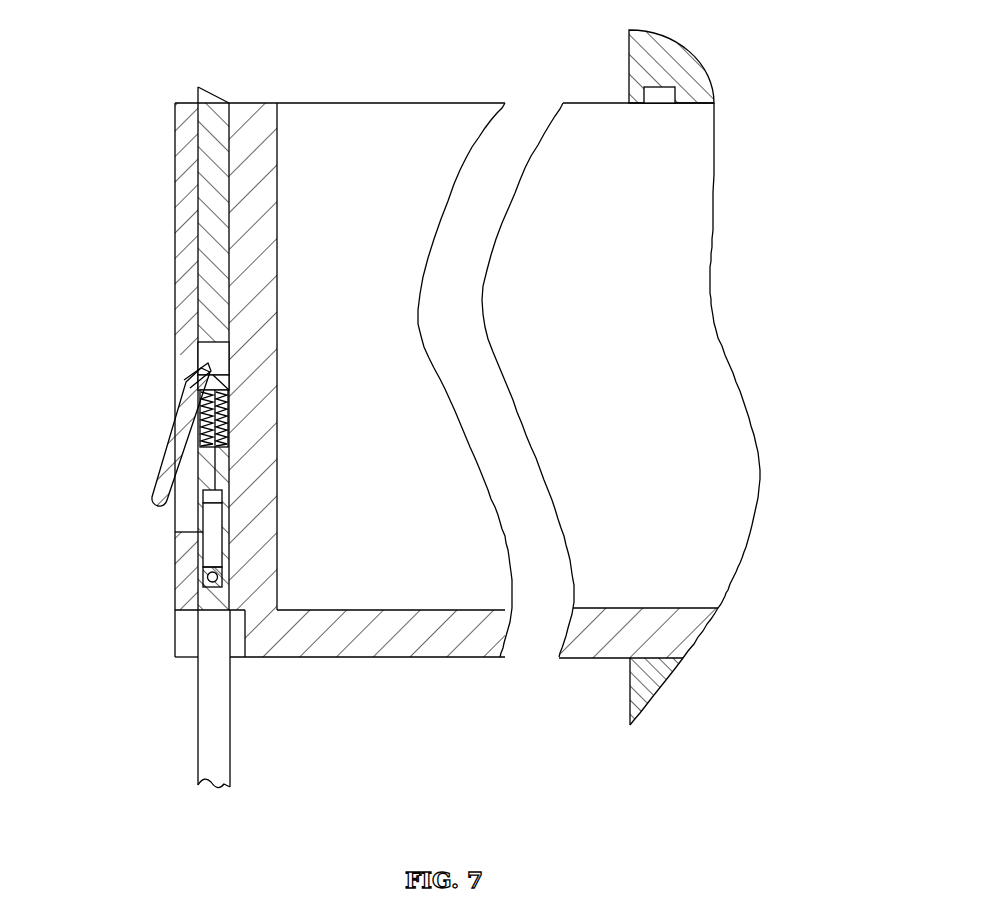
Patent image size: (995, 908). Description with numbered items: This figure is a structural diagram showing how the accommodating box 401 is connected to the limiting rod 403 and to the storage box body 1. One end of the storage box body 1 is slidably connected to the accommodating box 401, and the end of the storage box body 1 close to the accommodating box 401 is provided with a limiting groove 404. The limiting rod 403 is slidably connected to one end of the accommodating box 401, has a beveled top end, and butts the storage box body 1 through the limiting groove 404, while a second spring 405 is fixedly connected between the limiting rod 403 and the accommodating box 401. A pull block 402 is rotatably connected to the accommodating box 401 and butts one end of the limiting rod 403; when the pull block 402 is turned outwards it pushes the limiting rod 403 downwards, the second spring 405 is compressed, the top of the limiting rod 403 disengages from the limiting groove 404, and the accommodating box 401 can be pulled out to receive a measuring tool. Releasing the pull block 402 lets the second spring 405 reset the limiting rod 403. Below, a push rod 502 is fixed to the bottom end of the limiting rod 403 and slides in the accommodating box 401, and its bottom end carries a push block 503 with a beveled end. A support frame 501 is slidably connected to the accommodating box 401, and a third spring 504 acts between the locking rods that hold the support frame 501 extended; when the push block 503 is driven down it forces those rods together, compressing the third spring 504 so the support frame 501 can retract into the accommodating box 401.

The storage box body 1 is at (633, 60).
The accommodating box 401 is at (190, 220).
The pull block 402 is at (160, 452).
The limiting rod 403 is at (215, 258).
The limiting groove 404 is at (652, 102).
The second spring 405 is at (212, 422).
The support frame 501 is at (217, 710).
The push rod 502 is at (222, 500).
The push block 503 is at (222, 522).
The third spring 504 is at (200, 580).